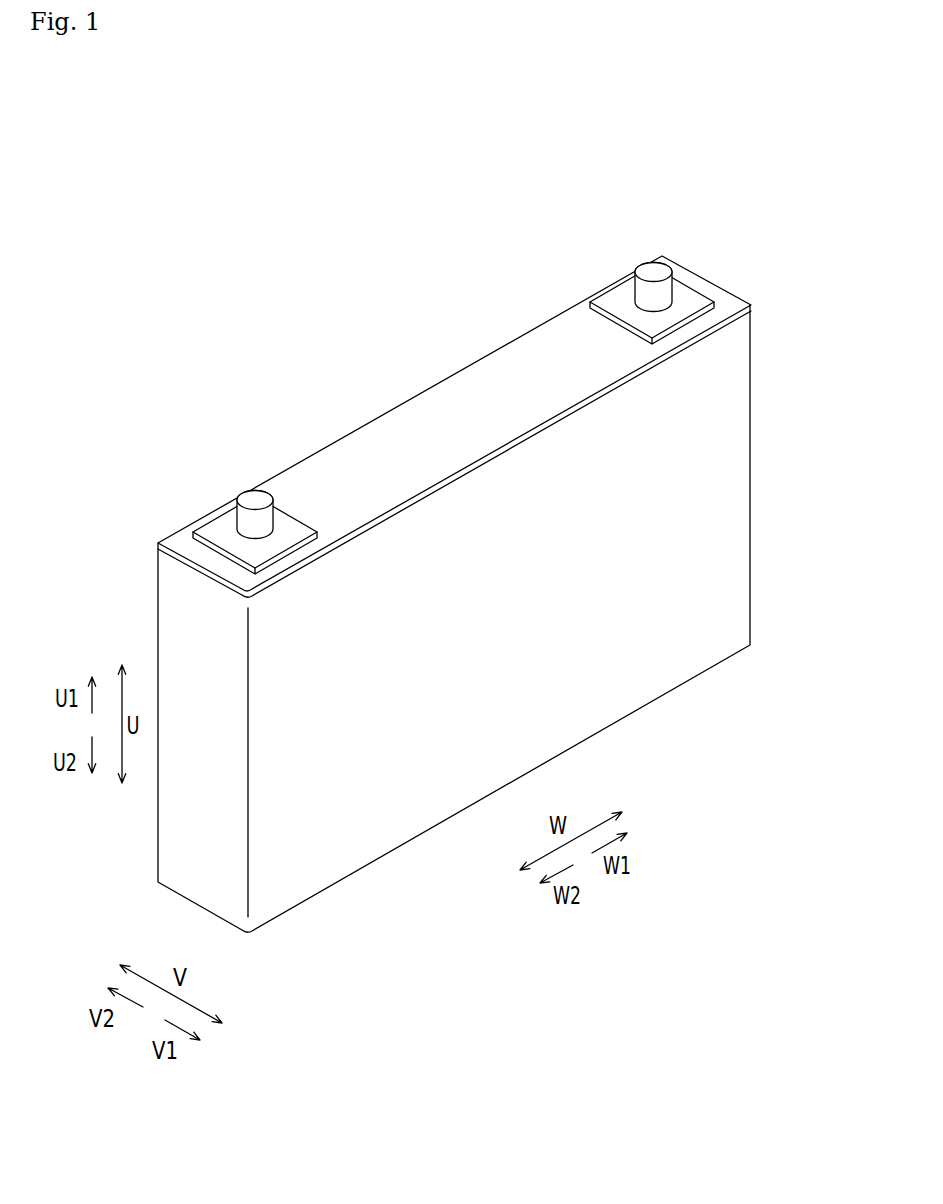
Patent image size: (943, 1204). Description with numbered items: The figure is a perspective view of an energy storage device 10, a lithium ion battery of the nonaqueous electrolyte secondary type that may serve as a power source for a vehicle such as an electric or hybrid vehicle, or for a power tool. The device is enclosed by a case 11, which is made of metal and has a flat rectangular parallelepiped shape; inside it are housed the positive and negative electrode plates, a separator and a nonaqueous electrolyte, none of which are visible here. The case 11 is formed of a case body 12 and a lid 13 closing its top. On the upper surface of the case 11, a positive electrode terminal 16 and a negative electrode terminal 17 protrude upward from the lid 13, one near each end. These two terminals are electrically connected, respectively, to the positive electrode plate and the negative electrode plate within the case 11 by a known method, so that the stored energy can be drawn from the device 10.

The energy storage device 10 is at (485, 559).
The case 11 is at (485, 594).
The case body 12 is at (710, 587).
The lid 13 is at (370, 443).
The positive electrode terminal 16 is at (656, 272).
The negative electrode terminal 17 is at (250, 500).